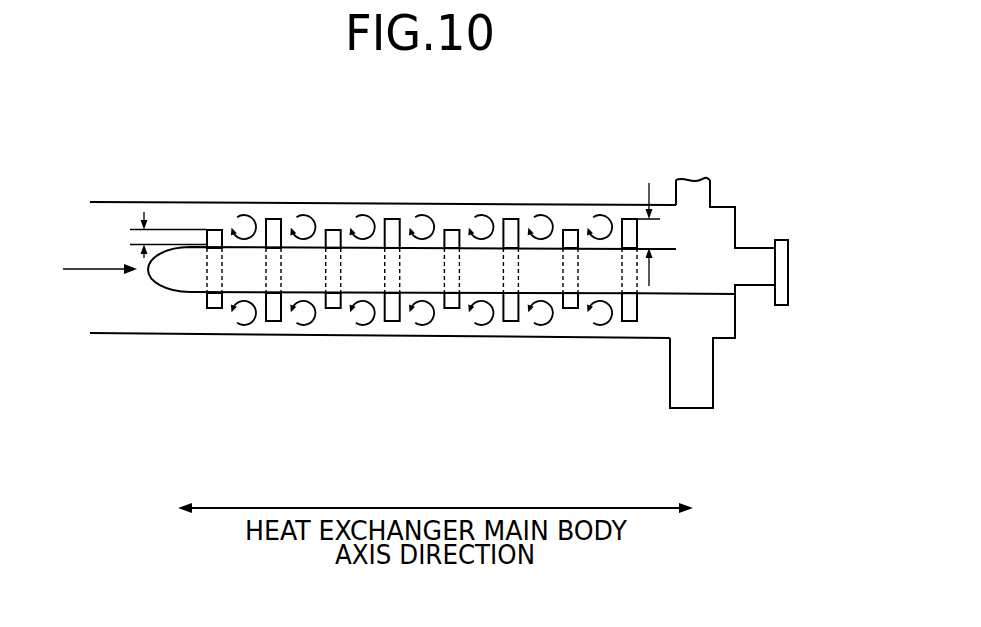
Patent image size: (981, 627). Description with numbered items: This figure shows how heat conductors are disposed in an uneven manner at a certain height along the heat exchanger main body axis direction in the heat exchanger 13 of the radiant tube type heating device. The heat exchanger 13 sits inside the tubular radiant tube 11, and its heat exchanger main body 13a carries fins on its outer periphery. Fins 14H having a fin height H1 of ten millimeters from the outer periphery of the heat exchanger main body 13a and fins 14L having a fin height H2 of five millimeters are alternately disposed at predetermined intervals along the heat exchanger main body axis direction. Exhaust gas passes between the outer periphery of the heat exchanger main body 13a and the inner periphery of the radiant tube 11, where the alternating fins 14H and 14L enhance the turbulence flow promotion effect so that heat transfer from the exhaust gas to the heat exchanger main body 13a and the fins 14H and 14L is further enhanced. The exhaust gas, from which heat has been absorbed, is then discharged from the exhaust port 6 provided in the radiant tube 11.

The radiant tube 11 is at (122, 202).
The heat exchanger 13 is at (178, 311).
The heat exchanger main body 13a is at (657, 297).
The fins 14H is at (273, 219).
The fins 14L is at (214, 309).
The exhaust port 6 is at (688, 418).
The fin height H1 is at (651, 235).
The fin height H2 is at (130, 230).